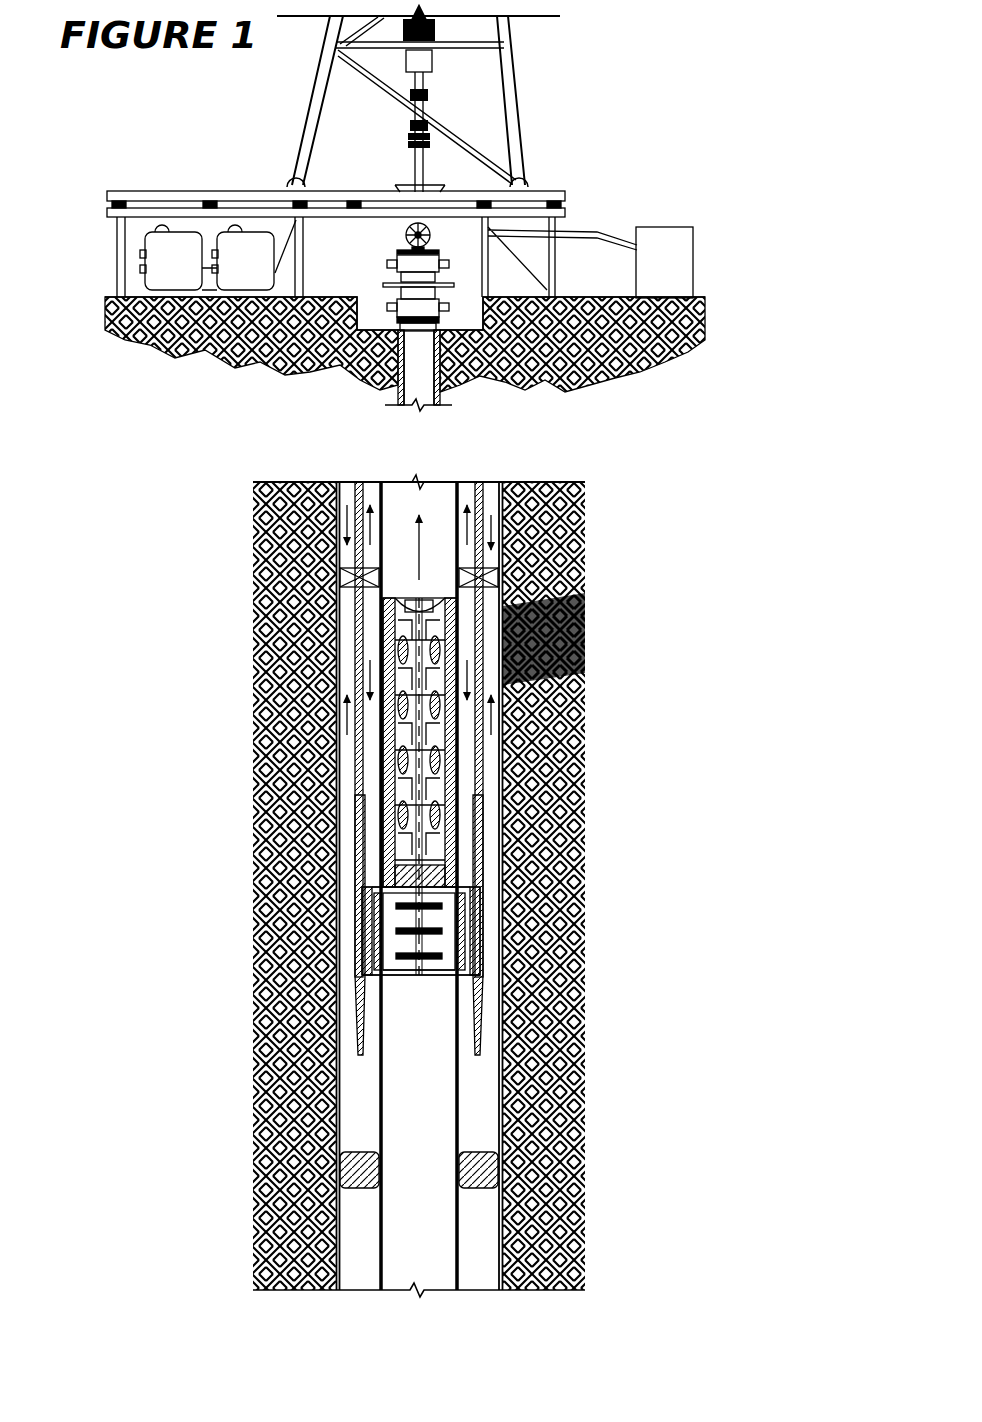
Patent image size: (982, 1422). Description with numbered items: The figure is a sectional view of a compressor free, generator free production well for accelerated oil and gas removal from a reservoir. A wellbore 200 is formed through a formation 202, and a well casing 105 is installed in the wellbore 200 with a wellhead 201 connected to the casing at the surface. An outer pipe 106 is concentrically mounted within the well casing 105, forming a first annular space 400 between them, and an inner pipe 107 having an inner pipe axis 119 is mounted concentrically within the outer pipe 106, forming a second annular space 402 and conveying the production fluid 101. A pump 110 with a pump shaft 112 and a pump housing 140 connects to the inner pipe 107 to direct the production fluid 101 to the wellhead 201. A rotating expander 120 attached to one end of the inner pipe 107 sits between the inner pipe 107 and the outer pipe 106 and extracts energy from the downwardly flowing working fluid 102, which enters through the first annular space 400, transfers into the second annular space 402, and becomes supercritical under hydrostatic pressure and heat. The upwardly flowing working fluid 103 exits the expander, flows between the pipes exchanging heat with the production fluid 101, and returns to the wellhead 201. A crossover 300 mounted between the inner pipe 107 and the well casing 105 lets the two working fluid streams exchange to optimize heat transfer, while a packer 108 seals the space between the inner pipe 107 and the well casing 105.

The production fluid 101 is at (421, 552).
The downwardly flowing working fluid 102 is at (337, 664).
The upwardly flowing working fluid 103 is at (369, 522).
The well casing 105 is at (489, 494).
The outer pipe 106 is at (360, 494).
The inner pipe 107 is at (386, 496).
The packer 108 is at (356, 1190).
The pump 110 is at (389, 621).
The pump shaft 112 is at (429, 786).
The inner pipe axis 119 is at (421, 979).
The rotating expander 120 is at (357, 971).
The pump housing 140 is at (394, 753).
The wellbore 200 is at (396, 322).
The wellhead 201 is at (397, 258).
The formation 202 is at (546, 600).
The crossover 300 is at (350, 577).
The first annular space 400 is at (348, 486).
The second annular space 402 is at (467, 486).